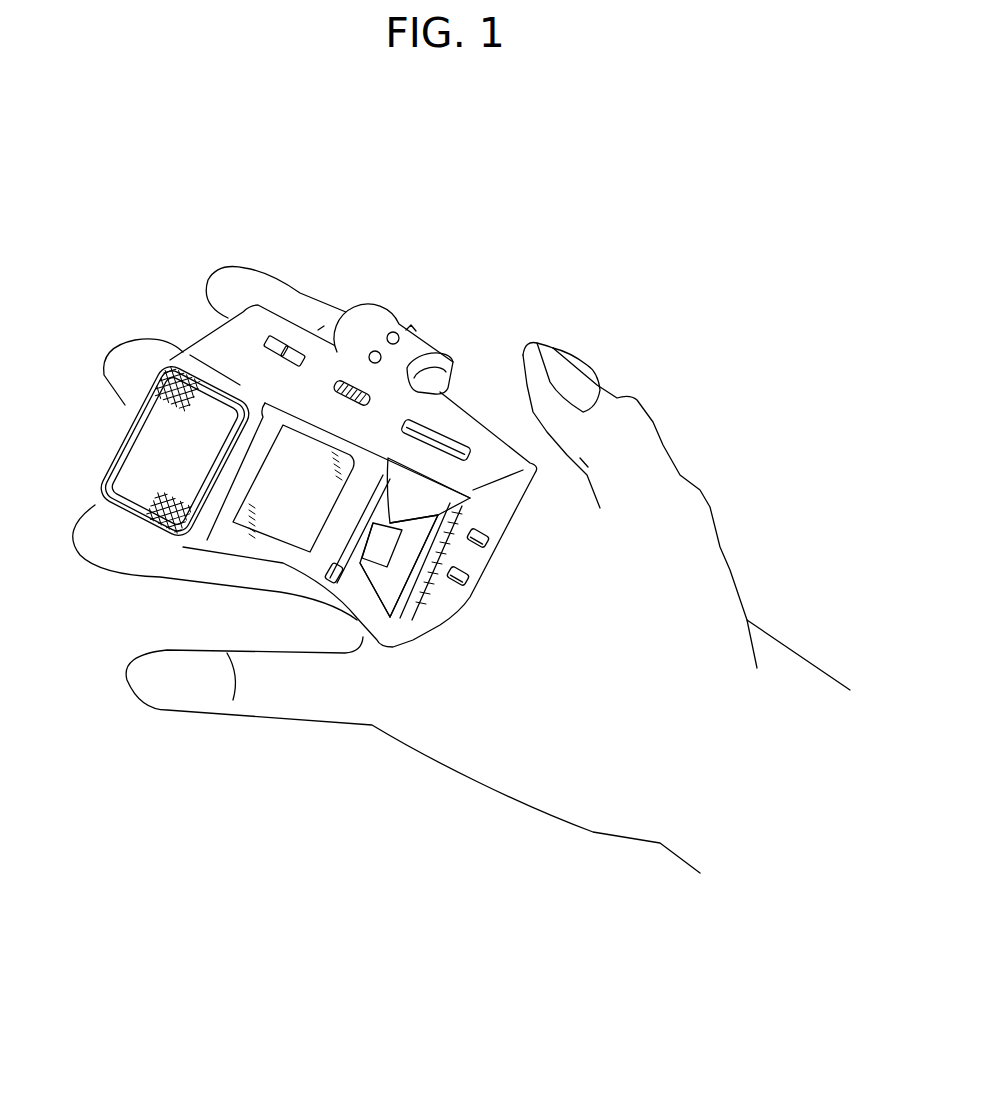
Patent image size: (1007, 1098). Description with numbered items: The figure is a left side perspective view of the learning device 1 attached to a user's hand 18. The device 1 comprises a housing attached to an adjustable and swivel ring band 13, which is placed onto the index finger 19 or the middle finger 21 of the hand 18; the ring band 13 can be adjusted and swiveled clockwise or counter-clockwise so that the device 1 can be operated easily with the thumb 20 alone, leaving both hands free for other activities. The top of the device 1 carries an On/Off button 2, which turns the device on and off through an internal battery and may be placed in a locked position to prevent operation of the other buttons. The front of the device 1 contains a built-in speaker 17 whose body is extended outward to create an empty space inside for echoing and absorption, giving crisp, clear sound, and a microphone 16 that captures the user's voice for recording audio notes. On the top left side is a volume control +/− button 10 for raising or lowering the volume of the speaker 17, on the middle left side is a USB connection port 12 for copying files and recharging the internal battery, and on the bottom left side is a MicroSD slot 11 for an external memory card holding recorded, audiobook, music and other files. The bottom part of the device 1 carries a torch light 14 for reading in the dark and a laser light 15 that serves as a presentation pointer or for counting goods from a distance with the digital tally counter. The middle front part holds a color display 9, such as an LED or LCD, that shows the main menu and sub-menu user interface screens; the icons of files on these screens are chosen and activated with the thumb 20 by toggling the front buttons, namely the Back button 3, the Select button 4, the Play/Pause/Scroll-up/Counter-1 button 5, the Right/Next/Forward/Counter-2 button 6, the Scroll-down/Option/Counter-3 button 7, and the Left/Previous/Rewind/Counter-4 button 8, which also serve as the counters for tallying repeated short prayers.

The device 1 is at (432, 632).
The On/Off button 2 is at (139, 392).
The Back button 3 is at (327, 580).
The Select button 4 is at (392, 550).
The Play/Pause/Scroll-up/Counter-1 button 5 is at (361, 524).
The Right/Next/Forward/Counter-2 button 6 is at (412, 507).
The Scroll-down/Option/Counter-3 button 7 is at (405, 578).
The Left/Previous/Rewind/Counter-4 button 8 is at (372, 601).
The color display 9 is at (246, 522).
The volume control +/− button 10 is at (278, 338).
The MicroSD slot 11 is at (451, 438).
The USB connection port 12 is at (363, 387).
The ring band 13 is at (380, 331).
The torch light 14 is at (464, 578).
The laser light 15 is at (489, 538).
The microphone 16 is at (93, 490).
The built-in speaker 17 is at (171, 362).
The user's hand 18 is at (596, 832).
The index finger 19 is at (228, 290).
The thumb 20 is at (625, 408).
The middle finger 21 is at (118, 364).